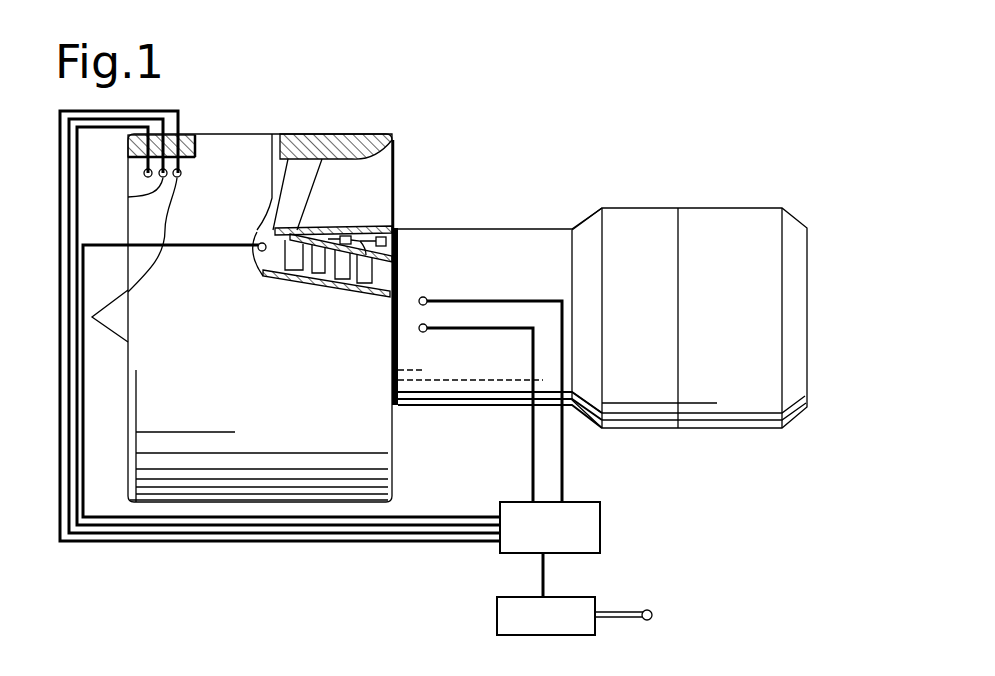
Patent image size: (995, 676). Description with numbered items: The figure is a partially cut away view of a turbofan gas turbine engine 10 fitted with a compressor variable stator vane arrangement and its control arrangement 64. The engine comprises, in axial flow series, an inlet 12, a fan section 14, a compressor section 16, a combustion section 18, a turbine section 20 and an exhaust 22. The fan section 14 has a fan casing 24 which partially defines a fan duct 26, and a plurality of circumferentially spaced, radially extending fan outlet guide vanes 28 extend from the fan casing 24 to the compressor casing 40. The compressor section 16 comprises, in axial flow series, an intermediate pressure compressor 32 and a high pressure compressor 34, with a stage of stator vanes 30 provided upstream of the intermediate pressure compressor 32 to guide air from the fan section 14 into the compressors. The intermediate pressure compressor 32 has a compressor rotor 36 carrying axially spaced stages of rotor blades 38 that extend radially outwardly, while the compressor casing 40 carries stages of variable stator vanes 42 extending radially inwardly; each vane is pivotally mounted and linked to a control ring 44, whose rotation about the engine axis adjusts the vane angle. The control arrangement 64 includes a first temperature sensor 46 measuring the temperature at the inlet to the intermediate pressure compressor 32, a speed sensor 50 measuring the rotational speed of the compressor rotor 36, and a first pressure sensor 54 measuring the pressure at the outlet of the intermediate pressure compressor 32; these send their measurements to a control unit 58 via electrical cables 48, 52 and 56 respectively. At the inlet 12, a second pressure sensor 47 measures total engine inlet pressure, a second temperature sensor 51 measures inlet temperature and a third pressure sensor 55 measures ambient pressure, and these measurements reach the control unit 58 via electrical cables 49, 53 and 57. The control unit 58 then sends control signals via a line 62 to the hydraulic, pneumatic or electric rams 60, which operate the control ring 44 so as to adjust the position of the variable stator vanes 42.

The turbofan gas turbine engine 10 is at (508, 153).
The inlet 12 is at (128, 458).
The fan section 14 is at (162, 492).
The compressor section 16 is at (473, 392).
The combustion section 18 is at (643, 383).
The turbine section 20 is at (730, 387).
The exhaust 22 is at (790, 247).
The fan casing 24 is at (312, 140).
The fan duct 26 is at (347, 167).
The fan outlet guide vanes 28 is at (298, 183).
The stage of stator vanes 30 is at (258, 258).
The intermediate pressure compressor 32 is at (373, 188).
The high pressure compressor 34 is at (512, 237).
The compressor rotor 36 is at (392, 358).
The rotor blades 38 is at (285, 275).
The compressor casing 40 is at (380, 262).
The variable stator vanes 42 is at (306, 282).
The control ring 44 is at (351, 237).
The first temperature sensor 46 is at (257, 245).
The second pressure sensor 47 is at (144, 174).
The electrical cable 48 is at (207, 519).
The electrical cable 49 is at (253, 527).
The speed sensor 50 is at (427, 332).
The second temperature sensor 51 is at (142, 197).
The electrical cable 52 is at (531, 470).
The electrical cable 53 is at (297, 535).
The first pressure sensor 54 is at (427, 297).
The third pressure sensor 55 is at (182, 175).
The electrical cable 56 is at (563, 470).
The electrical cable 57 is at (362, 543).
The control unit 58 is at (536, 538).
The rams 60 is at (532, 628).
The line 62 is at (545, 582).
The control arrangement 64 is at (685, 500).